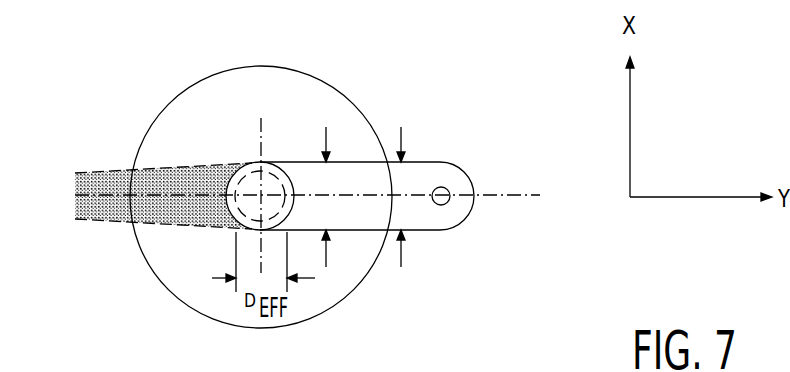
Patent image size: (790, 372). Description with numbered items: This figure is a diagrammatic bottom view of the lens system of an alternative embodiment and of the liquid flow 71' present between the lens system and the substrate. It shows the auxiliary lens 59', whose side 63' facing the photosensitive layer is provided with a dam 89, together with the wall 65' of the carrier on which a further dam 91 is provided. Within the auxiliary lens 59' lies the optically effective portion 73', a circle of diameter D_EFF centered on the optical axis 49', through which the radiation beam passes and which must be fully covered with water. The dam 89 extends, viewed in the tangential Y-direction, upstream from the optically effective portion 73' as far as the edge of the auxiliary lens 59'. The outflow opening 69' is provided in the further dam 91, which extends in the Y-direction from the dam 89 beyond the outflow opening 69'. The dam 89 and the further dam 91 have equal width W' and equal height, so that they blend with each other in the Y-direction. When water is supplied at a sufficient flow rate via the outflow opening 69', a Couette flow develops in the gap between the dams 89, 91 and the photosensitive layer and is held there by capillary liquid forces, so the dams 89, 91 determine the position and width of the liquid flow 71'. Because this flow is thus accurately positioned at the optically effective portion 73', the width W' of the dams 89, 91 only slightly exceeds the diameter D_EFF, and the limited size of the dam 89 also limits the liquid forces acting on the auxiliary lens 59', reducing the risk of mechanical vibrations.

The auxiliary lens 59' is at (261, 183).
The side of the auxiliary lens 63' is at (163, 134).
The liquid flow 71' is at (230, 253).
The wall 65' is at (367, 122).
The optically effective portion 73' is at (260, 122).
The optical axis 49' is at (263, 117).
The dam 89 is at (353, 173).
The further dam 91 is at (417, 173).
The outflow opening 69' is at (477, 181).